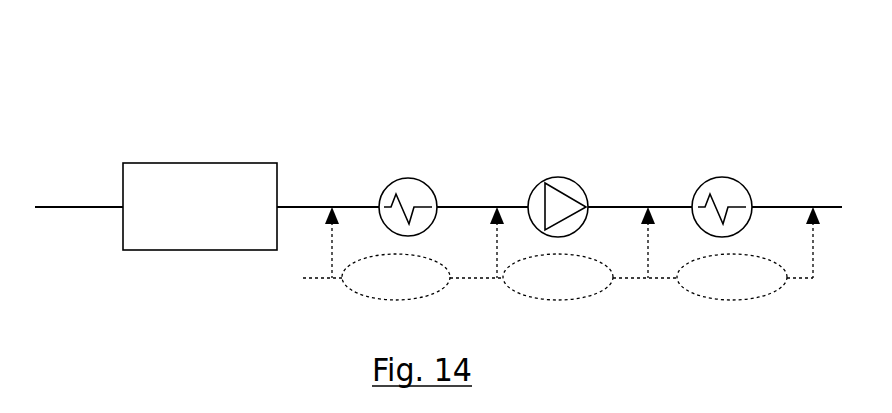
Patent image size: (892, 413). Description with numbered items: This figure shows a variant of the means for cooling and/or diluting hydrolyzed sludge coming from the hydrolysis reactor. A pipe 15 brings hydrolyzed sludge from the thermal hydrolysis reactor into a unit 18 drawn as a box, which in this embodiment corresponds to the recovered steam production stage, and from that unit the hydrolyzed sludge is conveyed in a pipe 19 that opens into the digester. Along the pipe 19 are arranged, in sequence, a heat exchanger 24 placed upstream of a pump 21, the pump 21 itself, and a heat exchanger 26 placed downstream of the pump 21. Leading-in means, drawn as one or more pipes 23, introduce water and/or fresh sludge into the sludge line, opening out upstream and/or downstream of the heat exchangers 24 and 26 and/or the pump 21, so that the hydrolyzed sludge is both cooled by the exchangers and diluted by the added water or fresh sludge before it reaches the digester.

The pipe 15 is at (88, 206).
The processing unit (box) 18 is at (160, 250).
The pipe 19 is at (320, 206).
The heat exchanger 24 is at (431, 184).
The pump 21 is at (583, 182).
The heat exchanger 26 is at (742, 182).
The pipes 23 is at (303, 278).